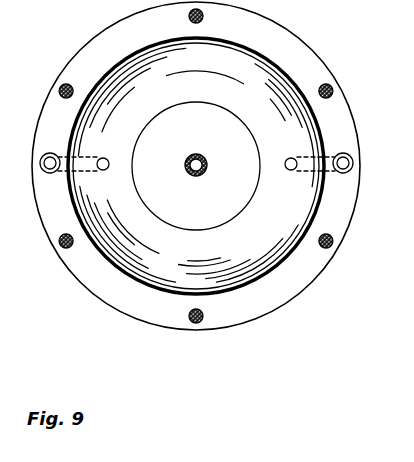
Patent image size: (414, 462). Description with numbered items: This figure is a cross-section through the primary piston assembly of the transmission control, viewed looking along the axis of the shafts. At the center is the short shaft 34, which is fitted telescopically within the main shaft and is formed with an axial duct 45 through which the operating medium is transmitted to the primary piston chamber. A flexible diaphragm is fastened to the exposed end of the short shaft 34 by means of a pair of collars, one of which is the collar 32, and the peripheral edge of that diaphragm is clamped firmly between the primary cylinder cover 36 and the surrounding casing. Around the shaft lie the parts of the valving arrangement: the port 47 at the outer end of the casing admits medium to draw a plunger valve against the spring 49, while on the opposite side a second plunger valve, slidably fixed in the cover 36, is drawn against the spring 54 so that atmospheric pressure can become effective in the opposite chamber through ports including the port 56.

The collar 32 is at (198, 111).
The short shaft 34 is at (198, 157).
The primary cylinder cover 36 is at (350, 134).
The axial duct 45 is at (203, 159).
The port 47 is at (123, 140).
The spring 49 is at (58, 130).
The spring 54 is at (381, 160).
The port 56 is at (292, 158).